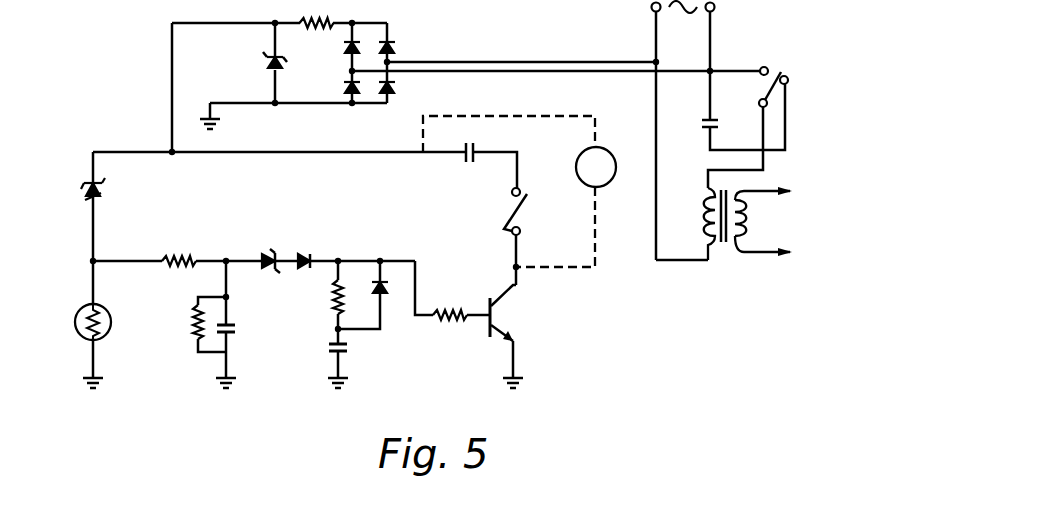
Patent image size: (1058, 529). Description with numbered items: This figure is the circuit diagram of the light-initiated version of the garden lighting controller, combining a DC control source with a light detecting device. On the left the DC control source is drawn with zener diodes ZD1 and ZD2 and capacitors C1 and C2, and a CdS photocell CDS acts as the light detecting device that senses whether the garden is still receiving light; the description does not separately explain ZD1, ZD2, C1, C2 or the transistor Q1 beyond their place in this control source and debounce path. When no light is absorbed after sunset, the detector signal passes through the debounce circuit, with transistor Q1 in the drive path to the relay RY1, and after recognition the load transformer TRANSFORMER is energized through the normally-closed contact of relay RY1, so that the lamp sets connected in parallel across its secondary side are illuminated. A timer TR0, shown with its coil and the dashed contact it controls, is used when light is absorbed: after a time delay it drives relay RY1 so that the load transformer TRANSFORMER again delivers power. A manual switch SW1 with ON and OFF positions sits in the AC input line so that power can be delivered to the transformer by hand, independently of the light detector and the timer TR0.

The zener diode ZD1 is at (294, 63).
The zener diode ZD2 is at (259, 276).
The capacitor C1 is at (230, 324).
The capacitor C2 is at (340, 324).
The timer TR0 is at (529, 191).
The relay RY1 is at (575, 191).
The transistor Q1 is at (498, 332).
The manual switch SW1 is at (806, 49).
The CdS photoconductive cell CDS is at (114, 339).
The load transformer TRANSFORMER is at (790, 223).